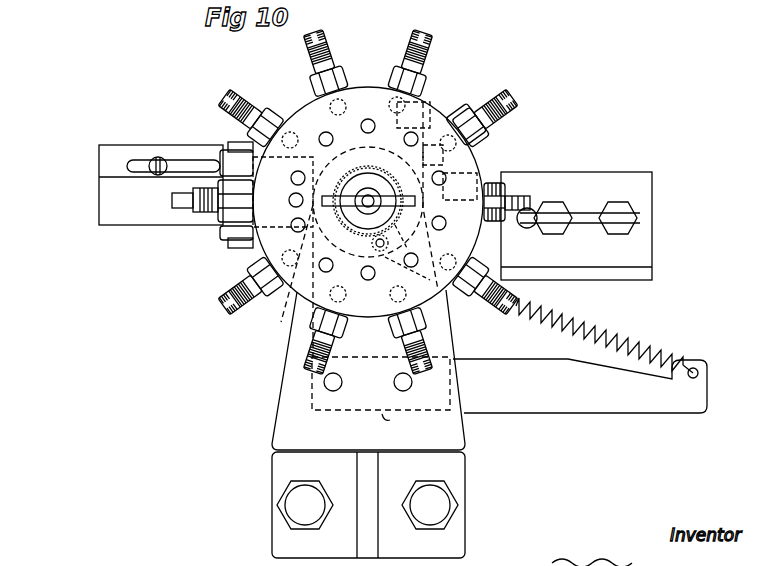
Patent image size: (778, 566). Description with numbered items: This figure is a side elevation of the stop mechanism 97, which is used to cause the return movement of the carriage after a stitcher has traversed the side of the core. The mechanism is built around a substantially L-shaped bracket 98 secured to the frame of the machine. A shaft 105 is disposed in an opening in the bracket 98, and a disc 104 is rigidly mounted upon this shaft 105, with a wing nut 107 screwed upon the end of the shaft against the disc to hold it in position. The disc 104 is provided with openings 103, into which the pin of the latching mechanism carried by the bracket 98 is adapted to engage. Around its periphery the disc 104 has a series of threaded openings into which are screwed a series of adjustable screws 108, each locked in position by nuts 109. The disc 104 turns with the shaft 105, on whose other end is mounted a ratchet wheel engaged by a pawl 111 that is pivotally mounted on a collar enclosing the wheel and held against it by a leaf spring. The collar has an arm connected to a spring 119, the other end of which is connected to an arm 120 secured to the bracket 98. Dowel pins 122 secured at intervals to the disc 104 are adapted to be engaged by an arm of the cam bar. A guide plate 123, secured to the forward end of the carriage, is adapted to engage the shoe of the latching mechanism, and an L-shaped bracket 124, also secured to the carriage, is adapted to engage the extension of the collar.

The stop mechanism 97 is at (568, 118).
The bracket 98 is at (297, 412).
The openings 103 is at (331, 133).
The disc 104 is at (305, 115).
The shaft 105 is at (366, 208).
The wing nut 107 is at (415, 202).
The adjustable screws 108 is at (438, 43).
The nuts 109 is at (440, 73).
The pawl 111 is at (395, 267).
The spring 119 is at (615, 343).
The arm 120 is at (573, 404).
The dowel pins 122 is at (350, 229).
The guide plate 123 is at (122, 183).
The bracket 124 is at (648, 188).